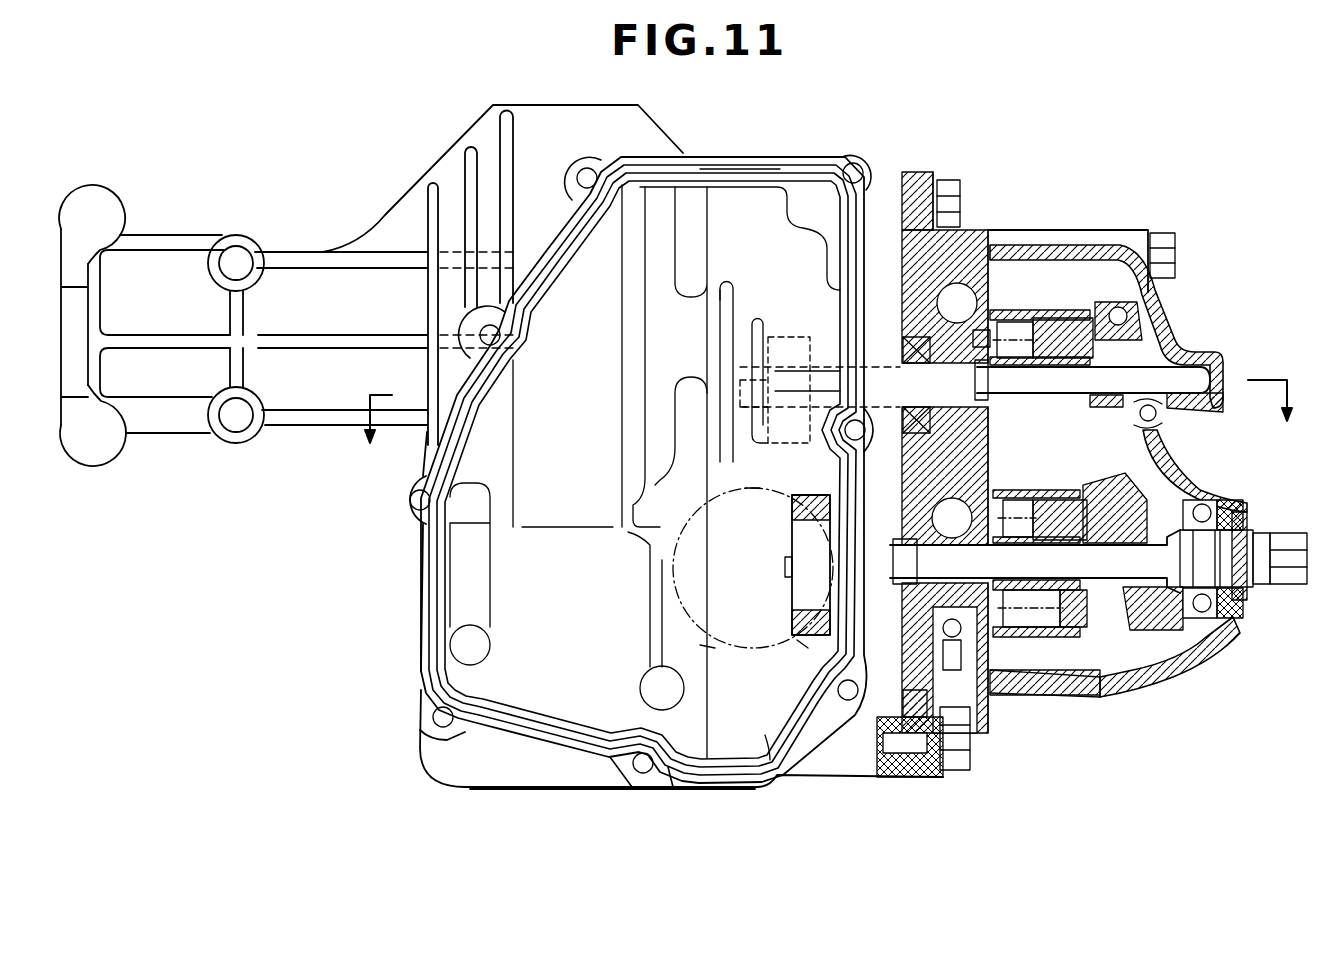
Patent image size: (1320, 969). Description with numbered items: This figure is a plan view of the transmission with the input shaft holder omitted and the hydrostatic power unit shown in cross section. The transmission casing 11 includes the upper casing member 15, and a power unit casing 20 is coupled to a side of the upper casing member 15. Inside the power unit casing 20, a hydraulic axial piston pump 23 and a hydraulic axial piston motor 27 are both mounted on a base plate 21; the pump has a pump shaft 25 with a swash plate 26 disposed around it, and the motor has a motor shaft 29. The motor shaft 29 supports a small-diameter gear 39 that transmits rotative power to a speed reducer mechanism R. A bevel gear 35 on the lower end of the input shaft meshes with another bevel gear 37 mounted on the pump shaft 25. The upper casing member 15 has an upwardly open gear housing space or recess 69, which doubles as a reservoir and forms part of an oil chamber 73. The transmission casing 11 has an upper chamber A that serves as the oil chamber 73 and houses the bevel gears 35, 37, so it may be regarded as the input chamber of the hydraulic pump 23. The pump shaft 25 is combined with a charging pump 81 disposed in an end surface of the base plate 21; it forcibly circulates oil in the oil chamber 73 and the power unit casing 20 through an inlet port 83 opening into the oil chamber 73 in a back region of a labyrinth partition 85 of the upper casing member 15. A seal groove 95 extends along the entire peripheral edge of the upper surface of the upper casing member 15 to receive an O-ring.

The transmission casing 11 is at (398, 769).
The upper casing member 15 is at (525, 773).
The gear housing space or recess 69 is at (740, 707).
The seal groove 95 is at (739, 157).
The upper chamber A is at (773, 775).
The speed reducer mechanism R is at (758, 298).
The oil chamber 73 is at (516, 580).
The small-diameter gear 39 is at (782, 337).
The charging pump 81 is at (870, 777).
The base plate 21 is at (970, 250).
The hydraulic axial piston motor 27 is at (1053, 292).
The motor shaft 29 is at (1140, 335).
The power unit casing 20 is at (1120, 378).
The hydraulic axial piston pump 23 is at (1125, 645).
The swash plate 26 is at (1205, 622).
The pump shaft 25 is at (1082, 562).
The inlet port 83 is at (790, 563).
The labyrinth partition 85 is at (745, 485).
The bevel gear 35 is at (715, 645).
The bevel gear 37 is at (800, 645).